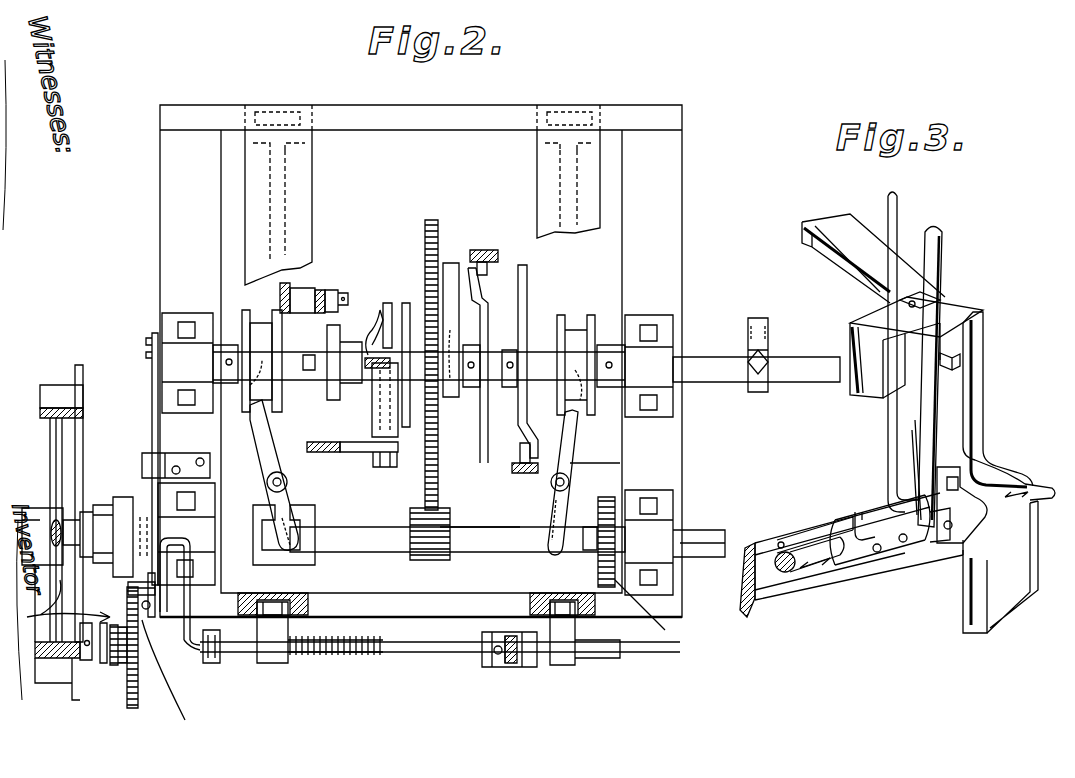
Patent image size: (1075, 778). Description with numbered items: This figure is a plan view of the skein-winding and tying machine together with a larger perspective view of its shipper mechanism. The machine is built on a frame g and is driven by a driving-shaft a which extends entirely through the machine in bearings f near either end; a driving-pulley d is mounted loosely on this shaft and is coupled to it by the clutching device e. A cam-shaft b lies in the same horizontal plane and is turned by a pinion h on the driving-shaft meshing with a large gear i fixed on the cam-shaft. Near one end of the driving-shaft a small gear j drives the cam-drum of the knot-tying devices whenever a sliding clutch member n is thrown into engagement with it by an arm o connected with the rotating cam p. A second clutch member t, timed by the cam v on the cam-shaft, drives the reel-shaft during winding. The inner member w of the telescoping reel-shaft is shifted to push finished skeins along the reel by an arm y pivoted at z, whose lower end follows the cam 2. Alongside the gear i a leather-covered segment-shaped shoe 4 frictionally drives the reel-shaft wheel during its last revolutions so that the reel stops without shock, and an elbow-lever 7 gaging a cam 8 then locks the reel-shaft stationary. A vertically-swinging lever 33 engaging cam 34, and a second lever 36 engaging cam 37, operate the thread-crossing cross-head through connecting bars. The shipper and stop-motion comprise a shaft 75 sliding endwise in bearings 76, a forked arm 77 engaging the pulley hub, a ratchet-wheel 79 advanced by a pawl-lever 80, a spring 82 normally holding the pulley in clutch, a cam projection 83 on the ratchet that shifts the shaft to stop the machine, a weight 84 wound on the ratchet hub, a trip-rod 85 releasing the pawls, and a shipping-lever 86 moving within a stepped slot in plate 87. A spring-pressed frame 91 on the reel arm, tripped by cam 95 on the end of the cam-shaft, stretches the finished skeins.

In FIG. 2, the driving-shaft a is at (22, 515).
In FIG. 2, the cam-shaft b is at (716, 358).
In FIG. 2, the driving-pulley d is at (80, 405).
In FIG. 2, the clutching device e is at (95, 505).
In FIG. 2, the bearings f is at (165, 515).
In FIG. 2, the frame g is at (160, 292).
In FIG. 3, the frame g is at (1040, 573).
In FIG. 2, the pinion h is at (445, 562).
In FIG. 2, the large gear i is at (425, 235).
In FIG. 2, the small gear j is at (640, 614).
In FIG. 2, the clutch member n is at (590, 552).
In FIG. 2, the arm o is at (570, 460).
In FIG. 2, the cam p is at (570, 325).
In FIG. 2, the clutch member t is at (312, 520).
In FIG. 2, the cam v is at (262, 318).
In FIG. 2, the inner member of reel-shaft w is at (270, 455).
In FIG. 2, the arm y is at (368, 370).
In FIG. 2, the pivot z is at (372, 420).
In FIG. 2, the cam 2 is at (388, 303).
In FIG. 2, the segment-shaped shoe 4 is at (452, 262).
In FIG. 2, the elbow-lever 7 is at (320, 290).
In FIG. 2, the cam 8 is at (340, 328).
In FIG. 2, the vertically-swinging lever 33 is at (520, 475).
In FIG. 2, the cam 34 is at (530, 285).
In FIG. 2, the second lever 36 is at (487, 250).
In FIG. 2, the cam 37 is at (488, 290).
In FIG. 2, the shaft 75 is at (152, 635).
In FIG. 3, the shaft 75 is at (812, 572).
In FIG. 2, the bearings 76 is at (272, 665).
In FIG. 3, the bearings 76 is at (1000, 528).
In FIG. 2, the forked arm 77 is at (72, 618).
In FIG. 2, the ratchet-wheel 79 is at (127, 695).
In FIG. 2, the pawl-lever 80 is at (152, 418).
In FIG. 2, the spring 82 is at (362, 660).
In FIG. 2, the cam projection 83 is at (172, 678).
In FIG. 2, the weight 84 is at (62, 601).
In FIG. 2, the trip-rod 85 is at (217, 598).
In FIG. 3, the trip-rod 85 is at (812, 528).
In FIG. 3, the shipping-lever 86 is at (938, 270).
In FIG. 3, the plate 87 is at (950, 315).
In FIG. 2, the frame 91 is at (212, 665).
In FIG. 2, the cam 95 is at (760, 392).